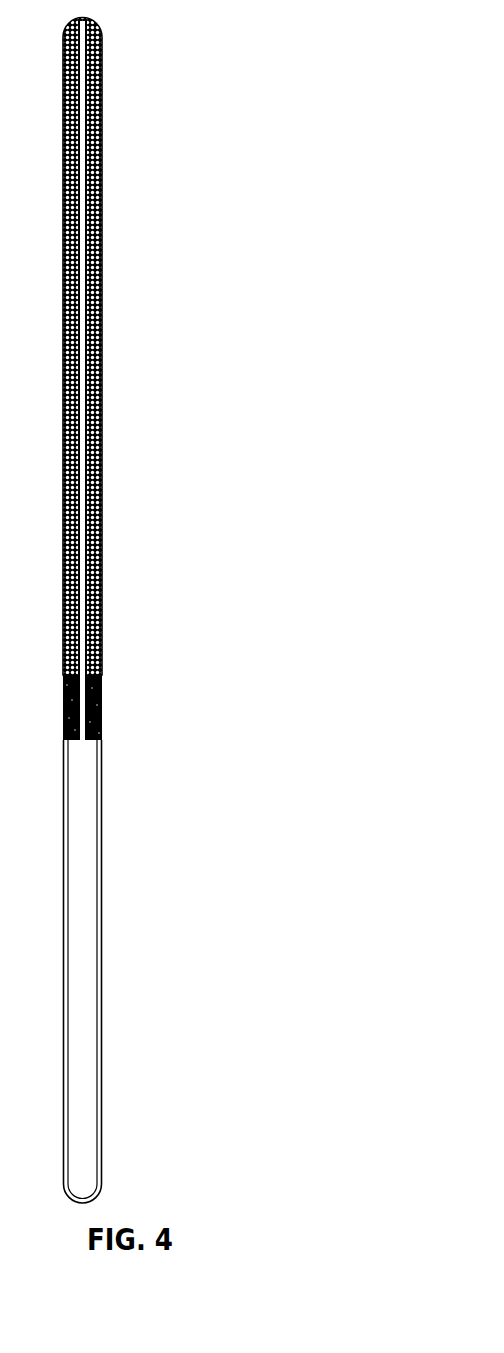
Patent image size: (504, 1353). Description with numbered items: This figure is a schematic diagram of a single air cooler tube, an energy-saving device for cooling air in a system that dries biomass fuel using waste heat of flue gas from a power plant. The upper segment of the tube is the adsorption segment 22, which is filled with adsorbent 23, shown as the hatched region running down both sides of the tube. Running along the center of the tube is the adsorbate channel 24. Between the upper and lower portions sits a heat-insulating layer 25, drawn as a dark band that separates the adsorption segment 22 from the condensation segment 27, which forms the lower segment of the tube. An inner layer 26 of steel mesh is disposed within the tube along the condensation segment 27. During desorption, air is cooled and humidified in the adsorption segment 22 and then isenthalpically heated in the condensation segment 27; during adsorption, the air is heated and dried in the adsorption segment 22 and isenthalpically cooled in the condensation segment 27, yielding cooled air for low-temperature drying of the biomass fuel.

The adsorption segment 22 is at (99, 270).
The adsorbent 23 is at (100, 418).
The adsorbate channel 24 is at (83, 587).
The heat-insulating layer 25 is at (101, 687).
The inner layer of steel mesh 26 is at (99, 835).
The condensation segment 27 is at (83, 1023).